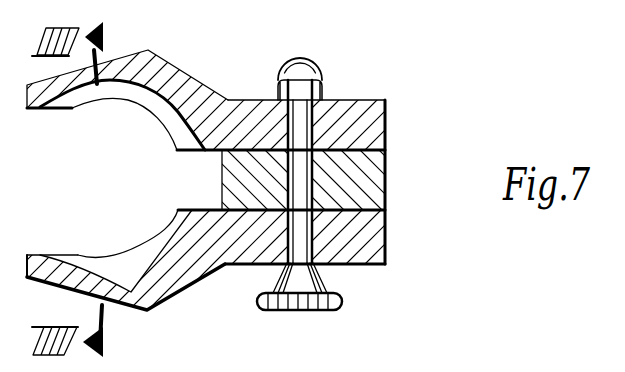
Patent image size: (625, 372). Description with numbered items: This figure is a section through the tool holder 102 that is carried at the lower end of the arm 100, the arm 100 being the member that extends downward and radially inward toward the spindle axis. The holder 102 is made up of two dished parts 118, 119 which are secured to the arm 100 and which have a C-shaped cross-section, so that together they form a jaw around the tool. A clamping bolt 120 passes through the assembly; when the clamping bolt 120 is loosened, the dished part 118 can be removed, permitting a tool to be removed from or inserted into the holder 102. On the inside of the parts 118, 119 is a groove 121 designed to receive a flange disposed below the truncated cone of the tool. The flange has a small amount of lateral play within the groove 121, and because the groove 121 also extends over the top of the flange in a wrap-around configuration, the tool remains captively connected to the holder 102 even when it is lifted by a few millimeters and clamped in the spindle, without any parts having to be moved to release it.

The arm 100 is at (385, 178).
The holder 102 is at (395, 133).
The dished part 118 is at (116, 282).
The dished part 119 is at (128, 102).
The clamping bolt 120 is at (342, 299).
The groove 121 is at (172, 120).